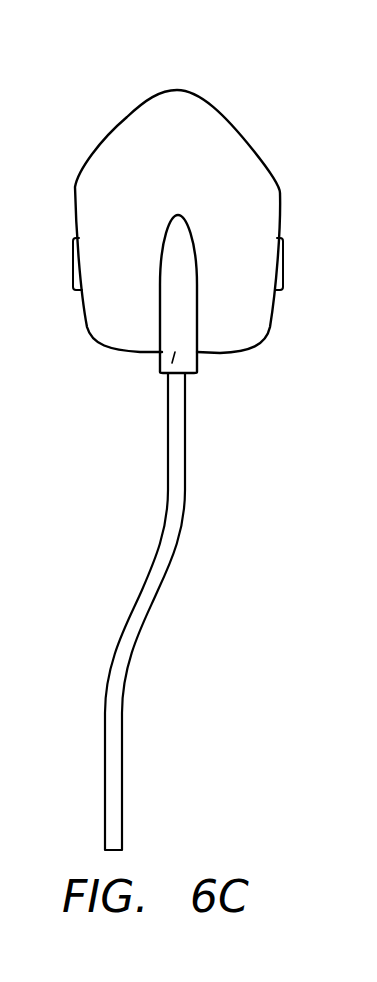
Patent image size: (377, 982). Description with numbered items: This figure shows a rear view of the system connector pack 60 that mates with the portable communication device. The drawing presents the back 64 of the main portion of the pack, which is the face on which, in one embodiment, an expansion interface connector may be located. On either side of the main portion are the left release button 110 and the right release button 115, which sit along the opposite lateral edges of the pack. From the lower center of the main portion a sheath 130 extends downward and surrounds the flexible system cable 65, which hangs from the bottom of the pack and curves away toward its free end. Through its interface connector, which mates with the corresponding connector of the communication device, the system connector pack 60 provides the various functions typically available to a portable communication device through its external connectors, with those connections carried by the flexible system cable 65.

The system connector pack 60 is at (252, 88).
The back of the main portion 64 is at (225, 168).
The left release button 110 is at (73, 285).
The right release button 115 is at (282, 263).
The sheath 130 is at (167, 370).
The flexible system cable 65 is at (150, 598).